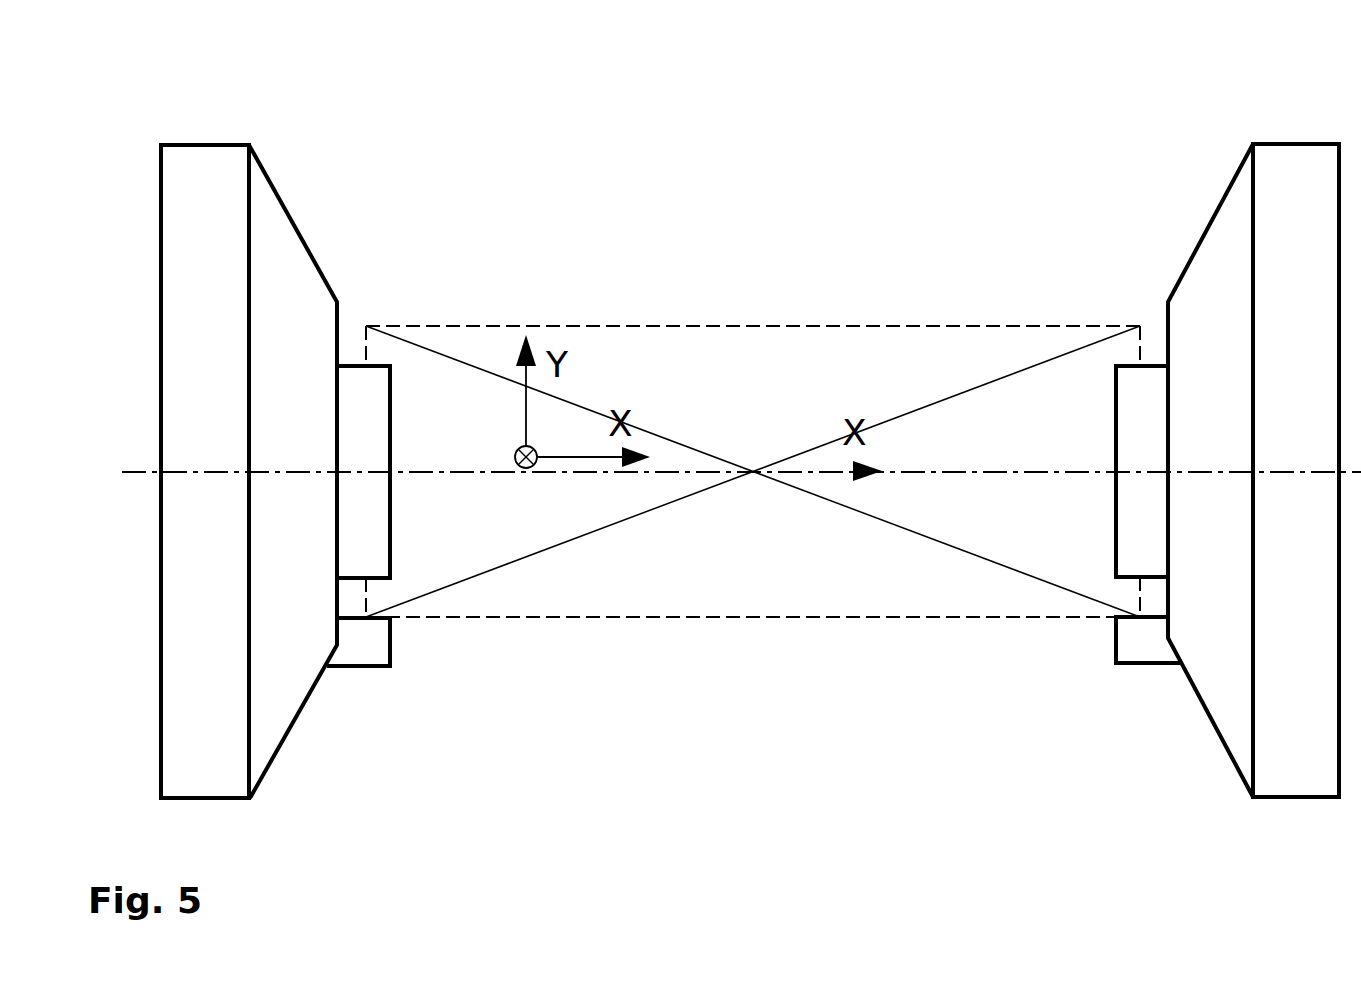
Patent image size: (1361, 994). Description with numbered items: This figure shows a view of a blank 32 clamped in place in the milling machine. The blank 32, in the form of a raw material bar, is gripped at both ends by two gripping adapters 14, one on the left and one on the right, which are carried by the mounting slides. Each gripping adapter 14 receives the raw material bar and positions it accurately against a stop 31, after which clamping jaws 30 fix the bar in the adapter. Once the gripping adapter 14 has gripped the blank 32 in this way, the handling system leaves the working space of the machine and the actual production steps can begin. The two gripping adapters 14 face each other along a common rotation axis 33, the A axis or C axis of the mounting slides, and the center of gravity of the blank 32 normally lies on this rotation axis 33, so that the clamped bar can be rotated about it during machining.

The gripping adapter 14 is at (276, 293).
The clamping jaw 30 is at (354, 402).
The stop for blank 31 is at (364, 648).
The blank 32 is at (739, 582).
The A axis and C axis of mounting slides 33 is at (947, 471).